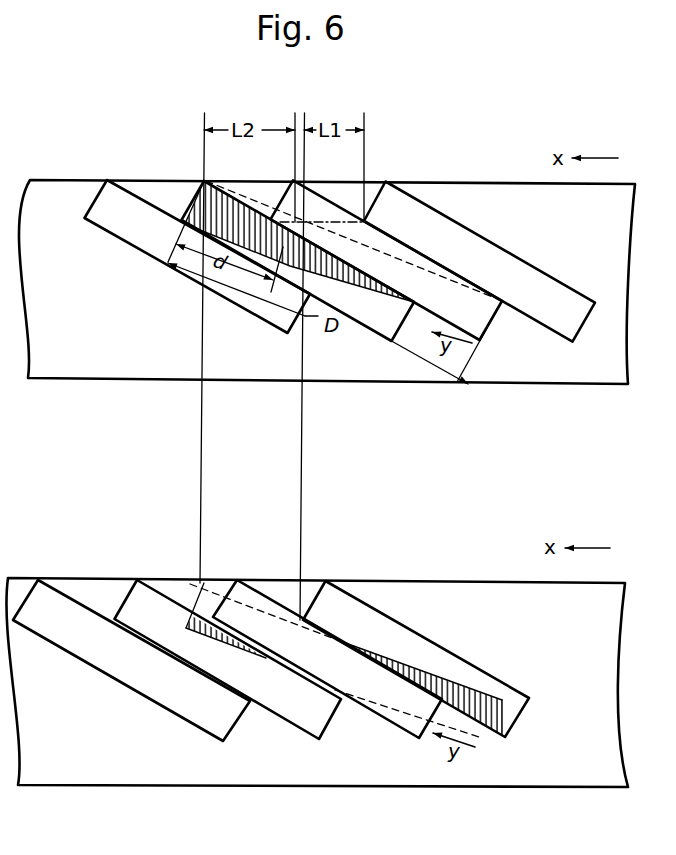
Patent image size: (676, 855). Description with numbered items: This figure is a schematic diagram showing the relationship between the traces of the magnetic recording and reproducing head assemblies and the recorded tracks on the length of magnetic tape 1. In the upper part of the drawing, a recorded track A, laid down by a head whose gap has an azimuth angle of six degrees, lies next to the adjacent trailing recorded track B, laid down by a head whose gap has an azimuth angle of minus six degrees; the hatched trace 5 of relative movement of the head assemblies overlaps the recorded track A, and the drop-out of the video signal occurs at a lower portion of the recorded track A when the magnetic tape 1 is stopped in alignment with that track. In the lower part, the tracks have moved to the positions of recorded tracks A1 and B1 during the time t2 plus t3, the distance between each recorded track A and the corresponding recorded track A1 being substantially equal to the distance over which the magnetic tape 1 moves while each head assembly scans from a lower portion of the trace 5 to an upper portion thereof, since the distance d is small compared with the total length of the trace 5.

The magnetic tape 1 is at (515, 190).
The trace of relative movement of the head assemblies 5 is at (398, 310).
The recorded track A is at (366, 318).
The recorded track B is at (253, 312).
The recorded track A1 is at (296, 710).
The recorded track B1 is at (202, 718).